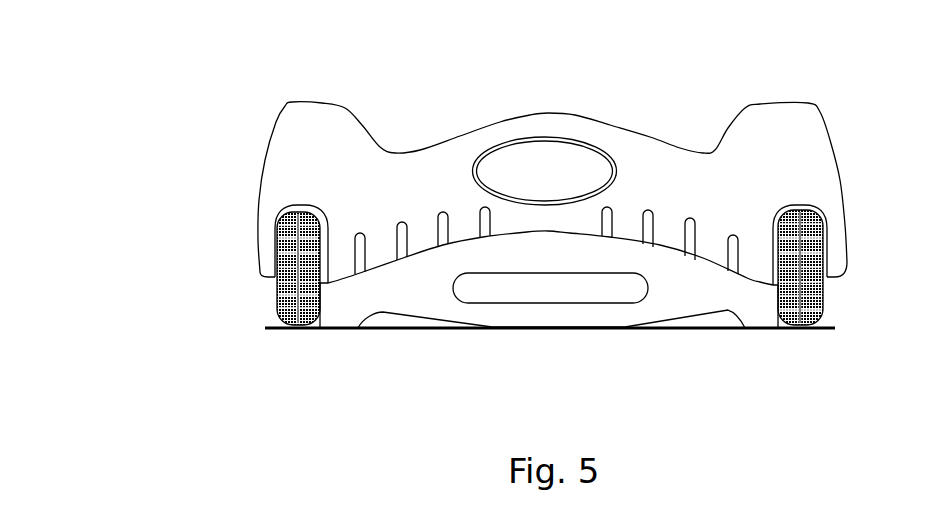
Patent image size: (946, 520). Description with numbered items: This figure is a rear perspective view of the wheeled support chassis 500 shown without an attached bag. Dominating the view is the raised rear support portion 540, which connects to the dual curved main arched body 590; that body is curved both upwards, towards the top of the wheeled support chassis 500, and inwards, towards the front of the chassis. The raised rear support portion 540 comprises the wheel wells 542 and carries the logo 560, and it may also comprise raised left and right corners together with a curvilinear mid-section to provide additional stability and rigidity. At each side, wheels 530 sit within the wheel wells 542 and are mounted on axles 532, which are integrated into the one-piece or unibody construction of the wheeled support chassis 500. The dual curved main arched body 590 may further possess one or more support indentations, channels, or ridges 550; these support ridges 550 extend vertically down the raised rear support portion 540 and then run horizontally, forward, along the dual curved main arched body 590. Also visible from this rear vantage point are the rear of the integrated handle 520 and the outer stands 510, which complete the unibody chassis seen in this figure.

The wheeled support chassis 500 is at (190, 105).
The outer stands 510 is at (748, 317).
The integrated handle 520 is at (545, 315).
The wheels 530 is at (825, 295).
The axles 532 is at (830, 266).
The raised rear support portion 540 is at (787, 133).
The wheel wells 542 is at (826, 233).
The support ridges 550 is at (403, 258).
The logo 560 is at (578, 157).
The dual curved main arched body 590 is at (517, 233).